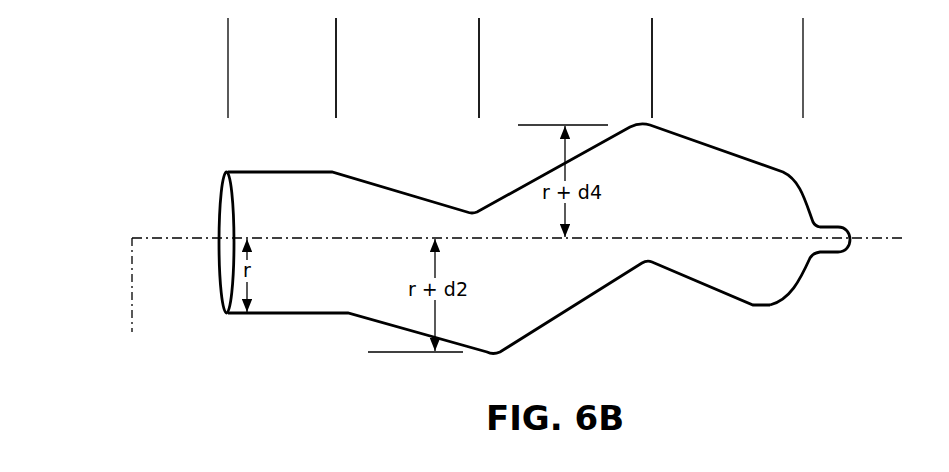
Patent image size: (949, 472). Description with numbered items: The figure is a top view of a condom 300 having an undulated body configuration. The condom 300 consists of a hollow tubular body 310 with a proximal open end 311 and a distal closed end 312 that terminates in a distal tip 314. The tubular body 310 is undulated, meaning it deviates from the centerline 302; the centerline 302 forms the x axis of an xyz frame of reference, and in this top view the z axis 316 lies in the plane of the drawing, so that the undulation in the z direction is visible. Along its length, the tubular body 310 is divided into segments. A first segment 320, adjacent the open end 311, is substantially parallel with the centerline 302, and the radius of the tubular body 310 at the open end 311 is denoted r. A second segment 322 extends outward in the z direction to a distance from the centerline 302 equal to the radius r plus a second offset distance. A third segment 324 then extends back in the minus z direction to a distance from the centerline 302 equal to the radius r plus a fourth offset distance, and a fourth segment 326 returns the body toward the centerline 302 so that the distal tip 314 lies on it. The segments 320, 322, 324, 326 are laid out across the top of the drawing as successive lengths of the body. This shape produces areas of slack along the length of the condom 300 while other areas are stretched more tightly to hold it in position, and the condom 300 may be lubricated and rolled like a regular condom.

The condom 300 is at (530, 254).
The centerline 302 is at (139, 238).
The hollow tubular body 310 is at (363, 183).
The proximal open end 311 is at (219, 297).
The distal closed end 312 is at (810, 268).
The distal tip 314 is at (847, 228).
The z axis 316 is at (131, 307).
The first segment 320 is at (229, 70).
The second segment 322 is at (478, 70).
The third segment 324 is at (651, 70).
The fourth segment length 326 is at (653, 70).